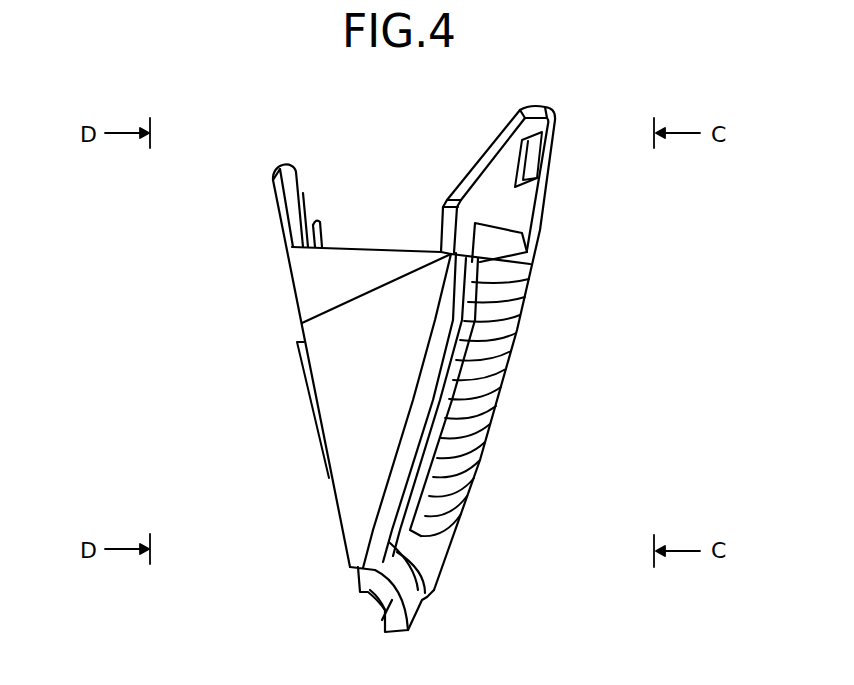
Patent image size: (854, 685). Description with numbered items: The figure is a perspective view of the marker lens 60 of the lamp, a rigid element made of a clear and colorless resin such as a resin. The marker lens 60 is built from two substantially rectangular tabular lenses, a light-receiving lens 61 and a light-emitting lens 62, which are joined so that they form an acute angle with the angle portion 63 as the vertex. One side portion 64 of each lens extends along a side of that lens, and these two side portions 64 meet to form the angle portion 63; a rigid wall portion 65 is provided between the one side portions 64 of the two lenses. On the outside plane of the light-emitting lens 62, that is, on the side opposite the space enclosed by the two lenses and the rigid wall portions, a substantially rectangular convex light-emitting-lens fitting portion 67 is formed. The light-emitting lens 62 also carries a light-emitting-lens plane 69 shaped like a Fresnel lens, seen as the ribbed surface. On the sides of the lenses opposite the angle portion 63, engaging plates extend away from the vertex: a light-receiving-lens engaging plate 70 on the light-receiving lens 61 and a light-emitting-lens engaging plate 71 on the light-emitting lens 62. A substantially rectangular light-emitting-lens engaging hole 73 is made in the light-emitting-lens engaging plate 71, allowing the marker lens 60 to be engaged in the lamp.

The marker lens 60 is at (248, 162).
The light-receiving-lens engaging plate 70 is at (293, 180).
The light-emitting-lens engaging plate 71 is at (478, 160).
The light-emitting-lens engaging hole 73 is at (533, 153).
The light-emitting-lens fitting portion 67 is at (513, 305).
The light-emitting lens 62 is at (504, 407).
The light-emitting-lens plane 69 is at (487, 410).
The side portion 64 is at (297, 290).
The light-receiving lens 61 is at (301, 392).
The rigid wall portion 65 is at (345, 443).
The angle portion 63 is at (384, 617).